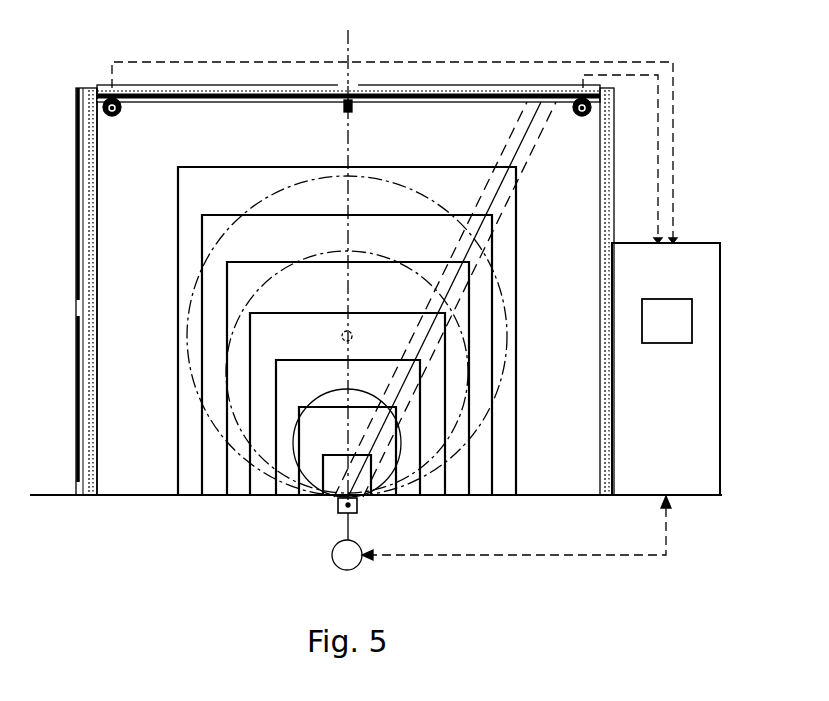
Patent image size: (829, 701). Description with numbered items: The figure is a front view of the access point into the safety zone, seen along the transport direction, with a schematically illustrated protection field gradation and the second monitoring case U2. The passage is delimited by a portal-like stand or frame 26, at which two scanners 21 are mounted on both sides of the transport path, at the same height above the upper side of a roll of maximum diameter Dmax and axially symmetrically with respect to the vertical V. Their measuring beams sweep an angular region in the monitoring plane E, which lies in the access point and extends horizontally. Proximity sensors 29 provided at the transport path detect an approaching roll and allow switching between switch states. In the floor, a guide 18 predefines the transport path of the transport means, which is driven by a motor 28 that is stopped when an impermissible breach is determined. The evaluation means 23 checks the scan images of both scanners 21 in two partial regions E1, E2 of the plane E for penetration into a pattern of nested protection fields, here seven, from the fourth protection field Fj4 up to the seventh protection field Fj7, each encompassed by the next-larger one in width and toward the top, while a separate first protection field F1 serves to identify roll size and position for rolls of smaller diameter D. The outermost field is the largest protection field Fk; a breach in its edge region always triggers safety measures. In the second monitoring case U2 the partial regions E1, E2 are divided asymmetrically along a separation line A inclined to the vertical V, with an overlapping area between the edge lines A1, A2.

The stand 26 is at (80, 90).
The scanner 21 is at (118, 98).
The evaluation means 23 is at (666, 369).
The proximity sensor 29 is at (344, 112).
The guide 18 is at (358, 506).
The drive means 28 is at (360, 566).
The second monitoring case U2 is at (729, 84).
The first partial region E1 is at (268, 155).
The second partial region E2 is at (566, 212).
The monitoring plane E is at (259, 238).
The vertical V is at (351, 43).
The separation line A is at (538, 117).
The edge line A1 is at (548, 150).
The edge line A2 is at (500, 153).
The diameter D is at (375, 250).
The maximum diameter Dmax is at (500, 278).
The protection field Fj7 is at (187, 490).
The protection field Fj4 is at (263, 490).
The first protection field F1 is at (327, 494).
The largest protection field Fk is at (108, 490).